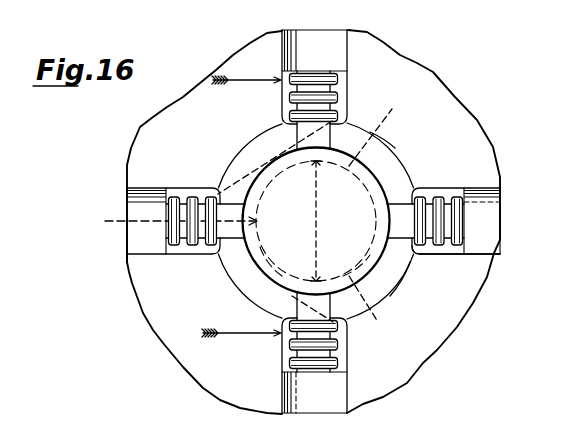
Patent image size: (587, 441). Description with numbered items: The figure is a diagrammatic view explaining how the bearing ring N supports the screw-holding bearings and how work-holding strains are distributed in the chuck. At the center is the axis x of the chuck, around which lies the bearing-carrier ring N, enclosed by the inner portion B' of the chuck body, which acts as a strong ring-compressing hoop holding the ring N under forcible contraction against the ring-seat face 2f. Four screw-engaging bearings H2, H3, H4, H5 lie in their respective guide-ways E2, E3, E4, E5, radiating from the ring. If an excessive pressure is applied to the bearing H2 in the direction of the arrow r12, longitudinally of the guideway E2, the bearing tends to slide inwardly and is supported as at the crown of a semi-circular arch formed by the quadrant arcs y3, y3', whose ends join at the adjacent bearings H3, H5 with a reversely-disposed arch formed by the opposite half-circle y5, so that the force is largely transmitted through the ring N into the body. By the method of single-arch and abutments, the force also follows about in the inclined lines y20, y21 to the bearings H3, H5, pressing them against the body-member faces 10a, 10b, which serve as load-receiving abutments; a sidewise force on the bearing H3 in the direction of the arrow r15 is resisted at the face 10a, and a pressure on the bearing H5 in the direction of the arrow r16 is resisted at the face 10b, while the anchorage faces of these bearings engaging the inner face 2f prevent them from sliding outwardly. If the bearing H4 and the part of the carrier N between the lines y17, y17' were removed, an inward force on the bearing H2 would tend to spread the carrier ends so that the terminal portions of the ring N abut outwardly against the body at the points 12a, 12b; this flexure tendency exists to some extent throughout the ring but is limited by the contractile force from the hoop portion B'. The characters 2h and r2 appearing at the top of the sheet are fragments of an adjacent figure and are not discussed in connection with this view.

The fragment 2h is at (88, 8).
The fragment r2 is at (200, 3).
The inner portion of the body B' is at (327, 222).
The bearing ring N is at (243, 167).
The body-member face 10a is at (405, 56).
The body-member face 10b is at (348, 349).
The abutting point 12a is at (382, 142).
The abutting point 12b is at (396, 282).
The ring-seat face 2f is at (418, 258).
The guide-way for screw E2 is at (130, 207).
The guide-way for screw E3 is at (333, 43).
The guide-way for screw E4 is at (500, 199).
The guide-way for screw E5 is at (332, 408).
The screw-engaging bearing H2 is at (188, 250).
The screw-engaging bearing H3 is at (348, 84).
The screw-engaging bearing H4 is at (433, 189).
The screw-engaging bearing H5 is at (349, 353).
The axis of the chuck x is at (320, 221).
The arc line y3 is at (316, 221).
The arc line y3' is at (283, 261).
The arc line y5 is at (352, 272).
The force line y20 is at (296, 141).
The force line y21 is at (240, 248).
The boundary line y17 is at (387, 137).
The boundary line y17' is at (389, 299).
The arrow r12 is at (128, 246).
The arrow r15 is at (214, 78).
The arrow r16 is at (238, 336).